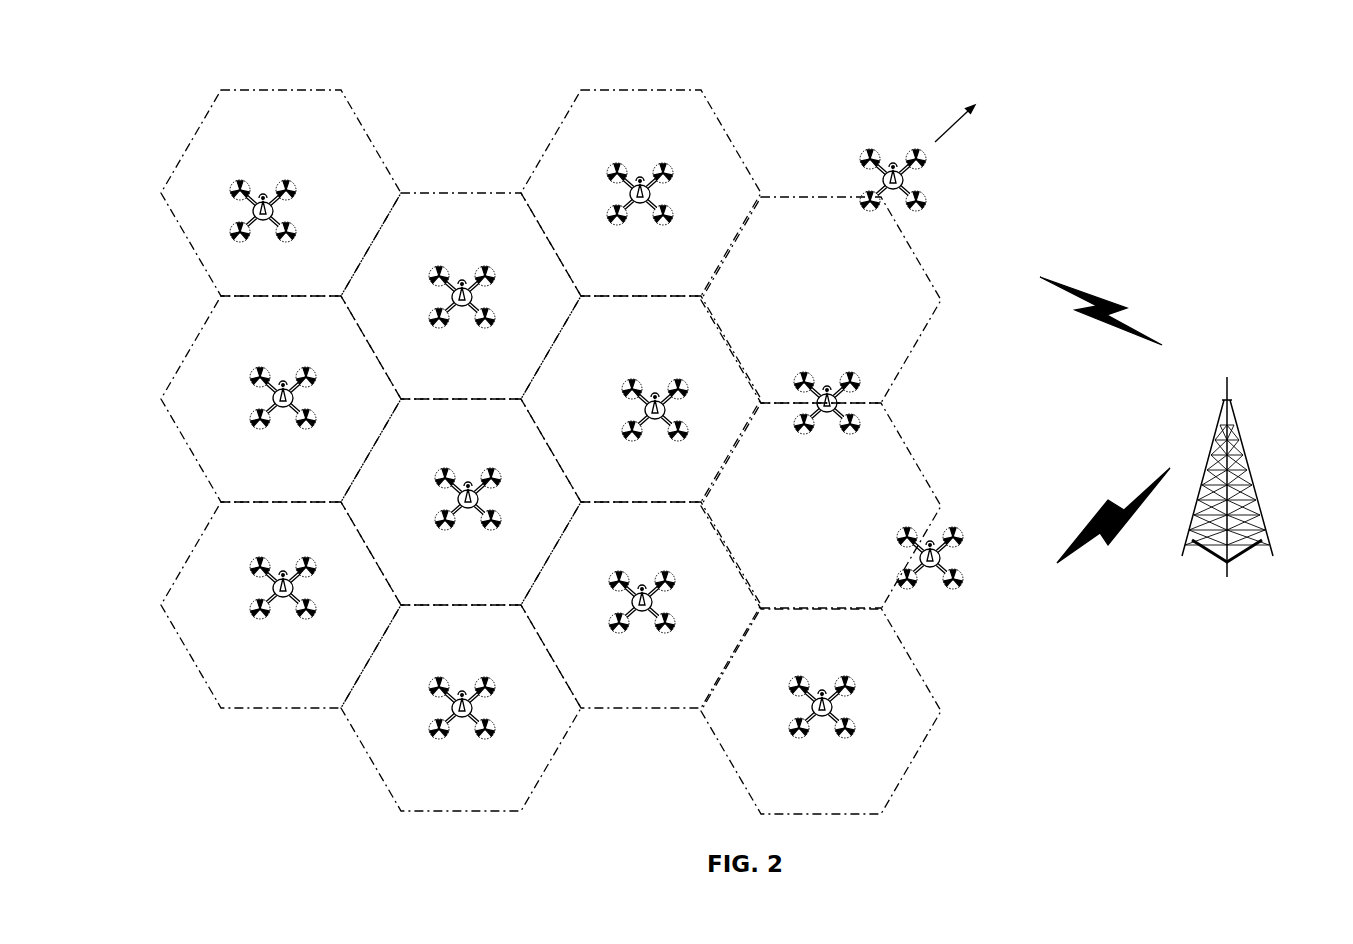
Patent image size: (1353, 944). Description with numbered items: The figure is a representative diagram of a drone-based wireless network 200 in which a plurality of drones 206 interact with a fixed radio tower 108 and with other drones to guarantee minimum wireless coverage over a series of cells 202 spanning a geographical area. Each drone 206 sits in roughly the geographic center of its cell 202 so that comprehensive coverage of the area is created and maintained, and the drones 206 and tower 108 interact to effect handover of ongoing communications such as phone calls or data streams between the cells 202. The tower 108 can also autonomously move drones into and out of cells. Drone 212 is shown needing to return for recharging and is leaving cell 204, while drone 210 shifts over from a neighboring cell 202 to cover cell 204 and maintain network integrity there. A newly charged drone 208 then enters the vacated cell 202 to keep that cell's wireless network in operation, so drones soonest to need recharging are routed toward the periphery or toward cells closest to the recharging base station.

The cellular network environment 200 is at (267, 66).
The cell 202 is at (518, 150).
The cell 204 is at (827, 356).
The drone 206 is at (637, 692).
The newly charged drone 208 is at (960, 527).
The drone 210 is at (857, 420).
The drone 212 is at (922, 212).
The fixed radio tower 108 is at (1232, 562).